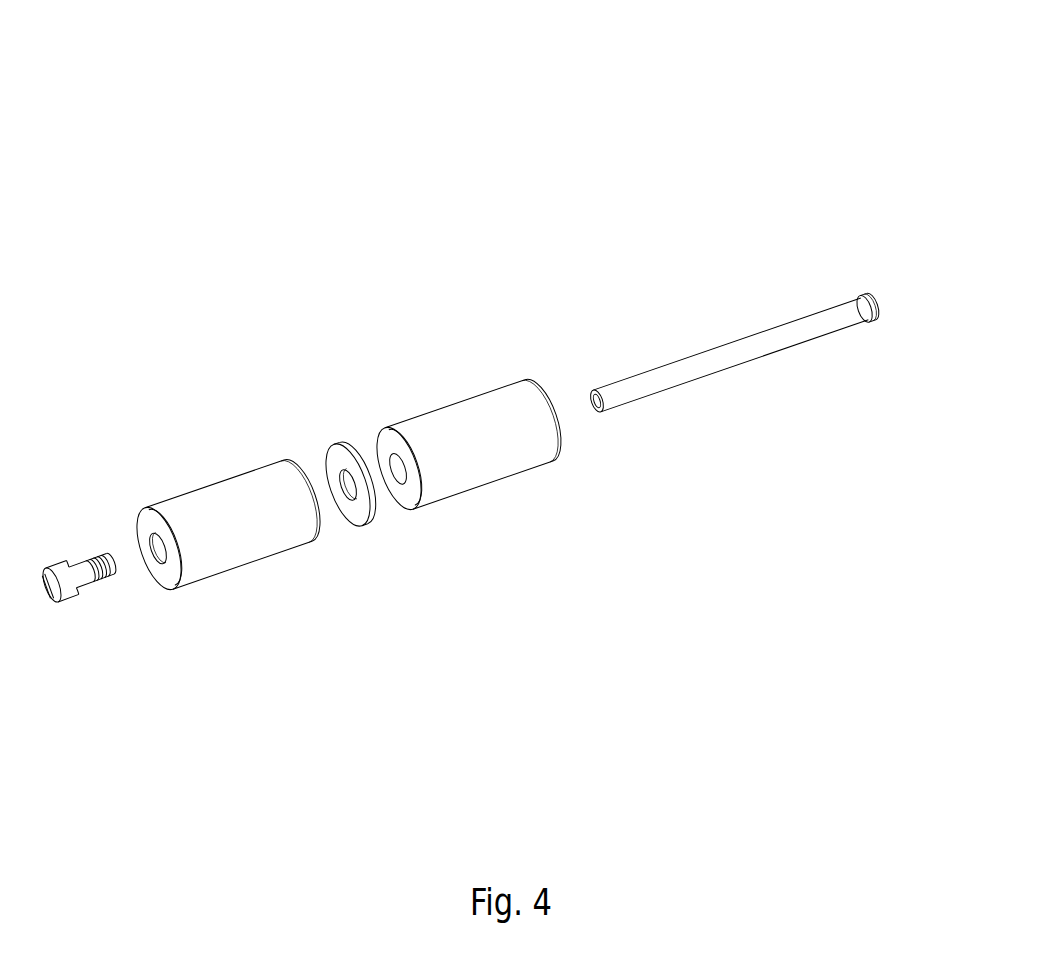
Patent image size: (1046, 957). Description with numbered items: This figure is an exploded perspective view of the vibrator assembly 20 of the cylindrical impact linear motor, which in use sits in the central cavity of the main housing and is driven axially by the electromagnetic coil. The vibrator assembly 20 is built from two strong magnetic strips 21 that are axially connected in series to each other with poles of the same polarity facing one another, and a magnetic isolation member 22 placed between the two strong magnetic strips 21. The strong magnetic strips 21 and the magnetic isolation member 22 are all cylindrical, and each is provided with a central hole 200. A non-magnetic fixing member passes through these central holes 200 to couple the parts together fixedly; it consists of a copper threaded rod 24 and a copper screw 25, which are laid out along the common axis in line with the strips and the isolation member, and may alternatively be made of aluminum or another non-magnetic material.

The vibrator assembly 20 is at (306, 240).
The strong magnetic strip 21 is at (267, 600).
The magnetic isolation member 22 is at (356, 415).
The copper threaded rod 24 is at (648, 342).
The copper screw 25 is at (103, 636).
The central hole 200 is at (106, 451).